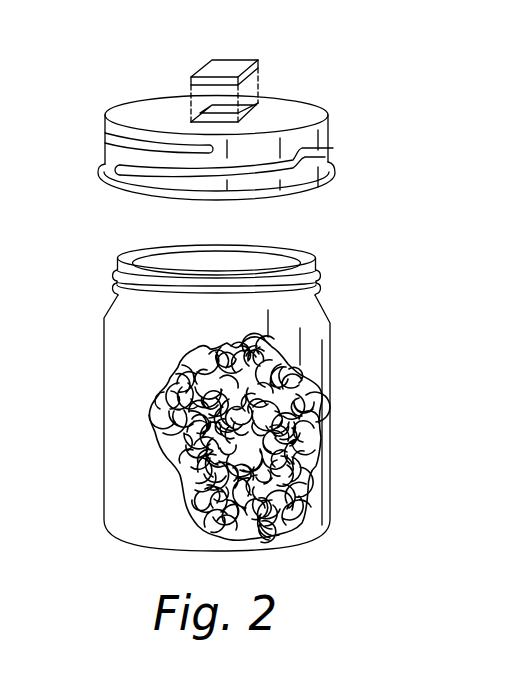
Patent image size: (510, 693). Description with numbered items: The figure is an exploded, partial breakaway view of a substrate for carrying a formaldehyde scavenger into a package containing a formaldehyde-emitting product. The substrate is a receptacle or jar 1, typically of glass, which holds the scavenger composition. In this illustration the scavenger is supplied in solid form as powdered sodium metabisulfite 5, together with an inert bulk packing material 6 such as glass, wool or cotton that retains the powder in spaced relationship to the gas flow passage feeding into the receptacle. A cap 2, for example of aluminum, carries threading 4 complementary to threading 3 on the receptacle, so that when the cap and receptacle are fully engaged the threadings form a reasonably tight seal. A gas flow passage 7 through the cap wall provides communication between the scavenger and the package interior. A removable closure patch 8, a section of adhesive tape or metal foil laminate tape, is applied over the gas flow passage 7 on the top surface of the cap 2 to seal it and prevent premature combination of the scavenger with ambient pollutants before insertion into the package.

The receptacle or jar 1 is at (103, 472).
The cap 2 is at (333, 130).
The threading on the receptacle 3 is at (320, 283).
The threading on the cap 4 is at (333, 148).
The powdered sodium metabisulfite 5 is at (192, 522).
The inert bulk packing material 6 is at (180, 463).
The gas flow passage 7 is at (243, 110).
The closure patch 8 is at (227, 67).